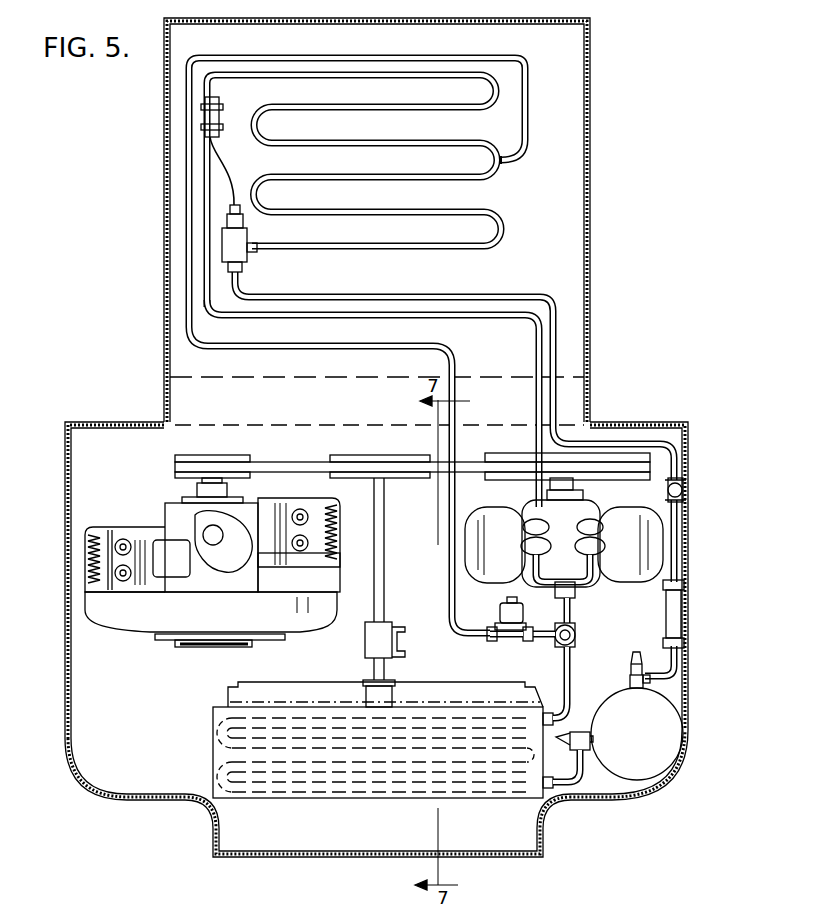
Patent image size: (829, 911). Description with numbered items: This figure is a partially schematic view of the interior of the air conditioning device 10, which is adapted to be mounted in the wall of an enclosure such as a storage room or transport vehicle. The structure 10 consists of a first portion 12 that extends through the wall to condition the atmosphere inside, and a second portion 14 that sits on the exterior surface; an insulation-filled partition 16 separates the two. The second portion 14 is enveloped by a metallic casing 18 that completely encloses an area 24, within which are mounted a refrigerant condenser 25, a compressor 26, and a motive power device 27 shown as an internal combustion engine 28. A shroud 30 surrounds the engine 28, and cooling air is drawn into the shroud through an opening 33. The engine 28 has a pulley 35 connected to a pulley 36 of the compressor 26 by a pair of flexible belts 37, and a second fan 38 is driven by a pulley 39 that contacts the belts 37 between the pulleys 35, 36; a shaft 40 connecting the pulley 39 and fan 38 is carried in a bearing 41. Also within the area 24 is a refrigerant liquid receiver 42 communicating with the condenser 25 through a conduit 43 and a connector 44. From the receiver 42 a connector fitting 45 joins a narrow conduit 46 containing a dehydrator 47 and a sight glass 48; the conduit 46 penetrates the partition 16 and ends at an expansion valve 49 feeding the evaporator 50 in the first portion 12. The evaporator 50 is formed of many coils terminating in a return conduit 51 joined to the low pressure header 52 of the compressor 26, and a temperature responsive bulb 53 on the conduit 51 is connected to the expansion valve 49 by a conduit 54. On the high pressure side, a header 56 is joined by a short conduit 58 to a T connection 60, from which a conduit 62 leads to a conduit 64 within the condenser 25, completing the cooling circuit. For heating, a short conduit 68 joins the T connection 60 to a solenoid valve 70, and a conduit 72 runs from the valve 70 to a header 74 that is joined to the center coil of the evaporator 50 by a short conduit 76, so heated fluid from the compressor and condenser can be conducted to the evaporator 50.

The air conditioning device 10 is at (355, 437).
The first portion 12 is at (164, 262).
The second portion 14 is at (65, 588).
The partition 16 is at (164, 403).
The metallic casing 18 is at (65, 476).
The area 24 is at (70, 700).
The refrigerant condenser 25 is at (354, 729).
The compressor 26 is at (564, 544).
The motive power device 27 is at (212, 578).
The internal combustion engine 28 is at (170, 527).
The shroud 30 is at (290, 630).
The opening 33 is at (220, 648).
The pulley 35 is at (185, 457).
The pulley 36 is at (522, 455).
The flexible belts 37 is at (300, 466).
The second fan 38 is at (255, 683).
The pulley 39 is at (358, 458).
The shaft 40 is at (382, 576).
The bearing 41 is at (365, 650).
The refrigerant liquid receiver 42 is at (672, 745).
The conduit 43 is at (578, 785).
The connector 44 is at (580, 731).
The connector fitting 45 is at (630, 684).
The narrow conduit 46 is at (557, 330).
The dehydrator 47 is at (684, 618).
The sight glass 48 is at (685, 492).
The expansion valve 49 is at (250, 252).
The evaporator 50 is at (503, 246).
The return conduit 51 is at (240, 314).
The low pressure header 52 is at (535, 502).
The temperature responsive bulb 53 is at (220, 104).
The conduit 54 is at (226, 175).
The header 56 is at (558, 595).
The conduit 58 is at (572, 612).
The T connection 60 is at (575, 635).
The conduit 62 is at (567, 696).
The conduit 64 is at (418, 715).
The conduit 68 is at (548, 640).
The valve 70 is at (510, 637).
The conduit 72 is at (449, 613).
The header 74 is at (528, 138).
The conduit 76 is at (506, 163).